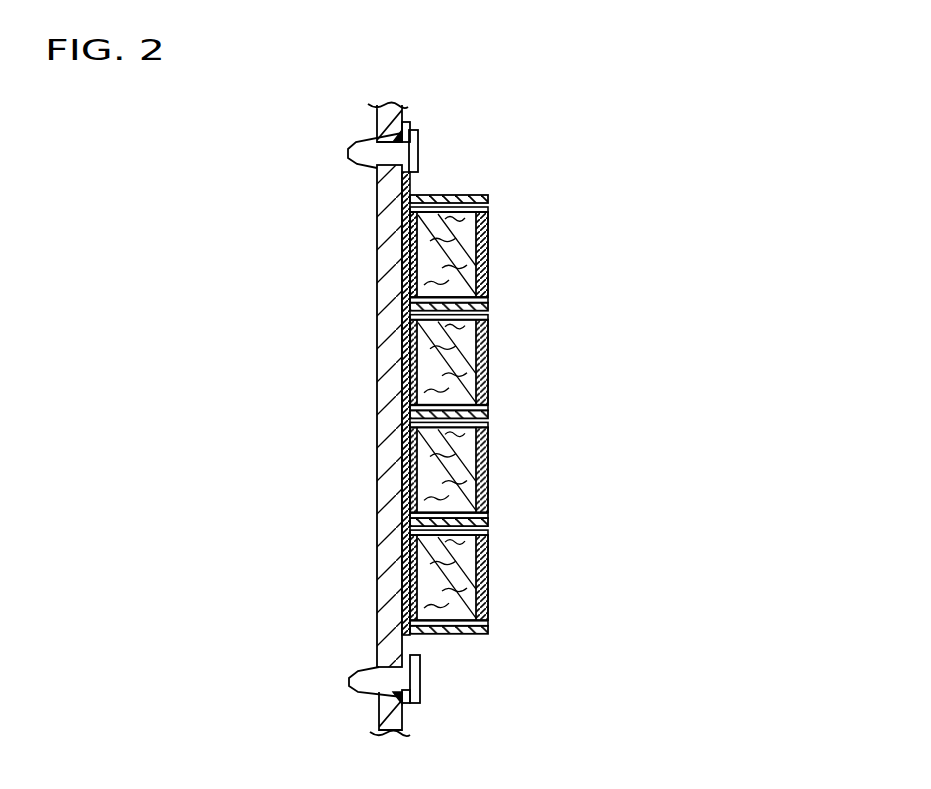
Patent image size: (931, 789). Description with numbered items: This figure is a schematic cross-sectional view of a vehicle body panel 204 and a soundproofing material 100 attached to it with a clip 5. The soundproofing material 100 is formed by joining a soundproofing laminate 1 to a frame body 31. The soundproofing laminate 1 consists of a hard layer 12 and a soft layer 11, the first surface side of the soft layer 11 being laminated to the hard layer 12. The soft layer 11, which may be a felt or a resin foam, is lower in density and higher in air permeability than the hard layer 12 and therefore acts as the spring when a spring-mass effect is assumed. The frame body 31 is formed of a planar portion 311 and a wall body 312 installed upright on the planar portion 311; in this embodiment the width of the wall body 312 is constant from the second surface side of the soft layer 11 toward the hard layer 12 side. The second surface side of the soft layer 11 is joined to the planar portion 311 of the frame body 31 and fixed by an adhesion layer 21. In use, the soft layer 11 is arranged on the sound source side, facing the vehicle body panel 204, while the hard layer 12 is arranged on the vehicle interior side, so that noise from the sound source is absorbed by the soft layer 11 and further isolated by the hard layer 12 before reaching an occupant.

The soundproofing material 100 is at (653, 212).
The soundproofing laminate 1 is at (572, 215).
The soft layer 11 is at (458, 236).
The hard layer 12 is at (480, 278).
The adhesion layer 21 is at (403, 262).
The vehicle body panel 204 is at (378, 425).
The frame body 31 is at (585, 100).
The planar portion 311 is at (410, 197).
The wall body 312 is at (480, 206).
The clip 5 is at (349, 147).